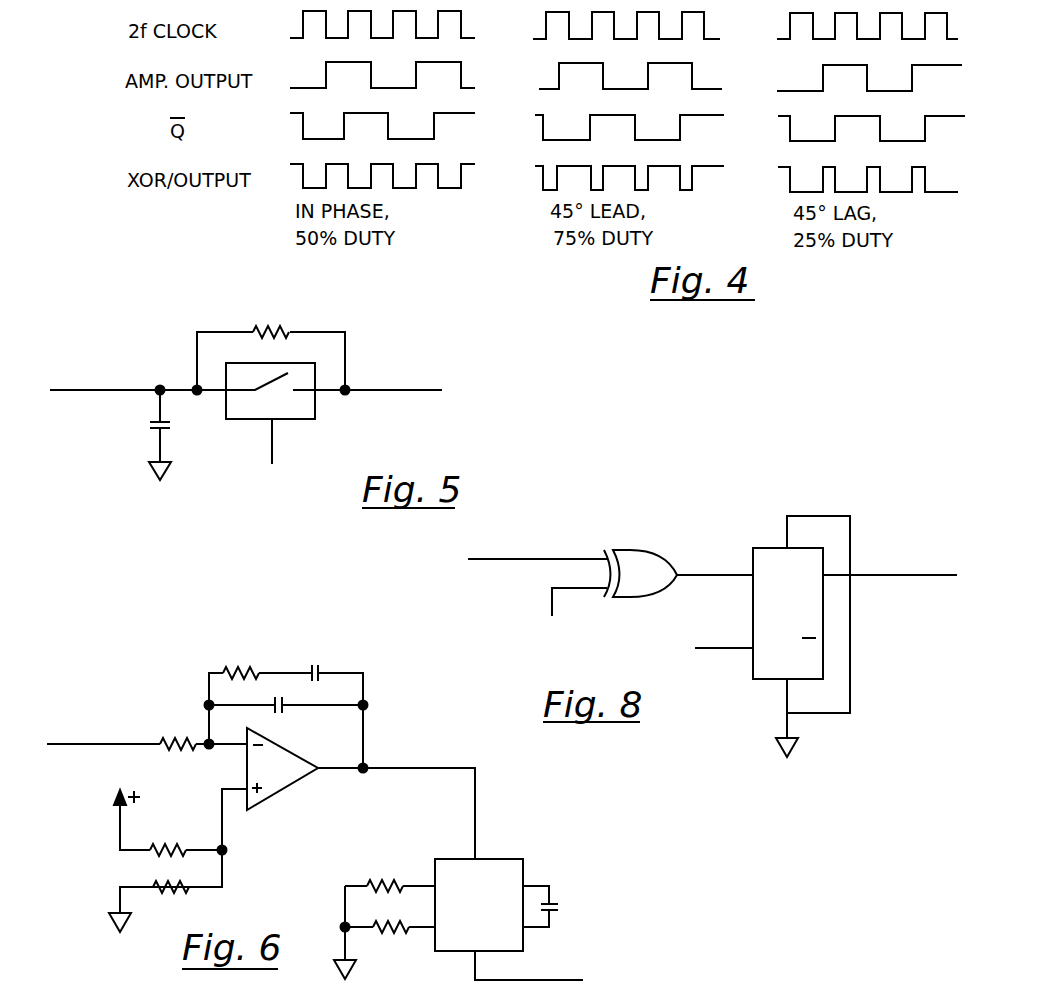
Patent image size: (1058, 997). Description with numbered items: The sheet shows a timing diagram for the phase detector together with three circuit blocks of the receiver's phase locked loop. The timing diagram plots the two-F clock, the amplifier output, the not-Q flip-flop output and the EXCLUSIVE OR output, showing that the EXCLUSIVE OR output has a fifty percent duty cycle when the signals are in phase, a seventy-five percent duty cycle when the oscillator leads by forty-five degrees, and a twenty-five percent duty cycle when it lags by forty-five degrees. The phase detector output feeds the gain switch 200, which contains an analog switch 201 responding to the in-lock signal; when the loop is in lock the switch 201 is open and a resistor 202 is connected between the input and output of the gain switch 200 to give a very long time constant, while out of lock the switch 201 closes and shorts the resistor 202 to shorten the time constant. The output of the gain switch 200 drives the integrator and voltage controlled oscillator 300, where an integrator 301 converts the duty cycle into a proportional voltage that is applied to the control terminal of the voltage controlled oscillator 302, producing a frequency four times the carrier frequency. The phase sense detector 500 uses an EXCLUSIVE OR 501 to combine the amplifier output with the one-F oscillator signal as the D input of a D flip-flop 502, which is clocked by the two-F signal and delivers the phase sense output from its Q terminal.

In FIG. 5, the gain switch 200 is at (259, 394).
In FIG. 5, the analog switch 201 is at (298, 421).
In FIG. 5, the resistor 202 is at (270, 328).
In FIG. 6, the integrator and voltage controlled oscillator 300 is at (315, 822).
In FIG. 6, the integrator 301 is at (288, 797).
In FIG. 6, the voltage controlled oscillator 302 is at (490, 898).
In FIG. 8, the phase sense detector 500 is at (712, 607).
In FIG. 8, the EXCLUSIVE OR 501 is at (652, 553).
In FIG. 8, the D flip-flop 502 is at (770, 582).